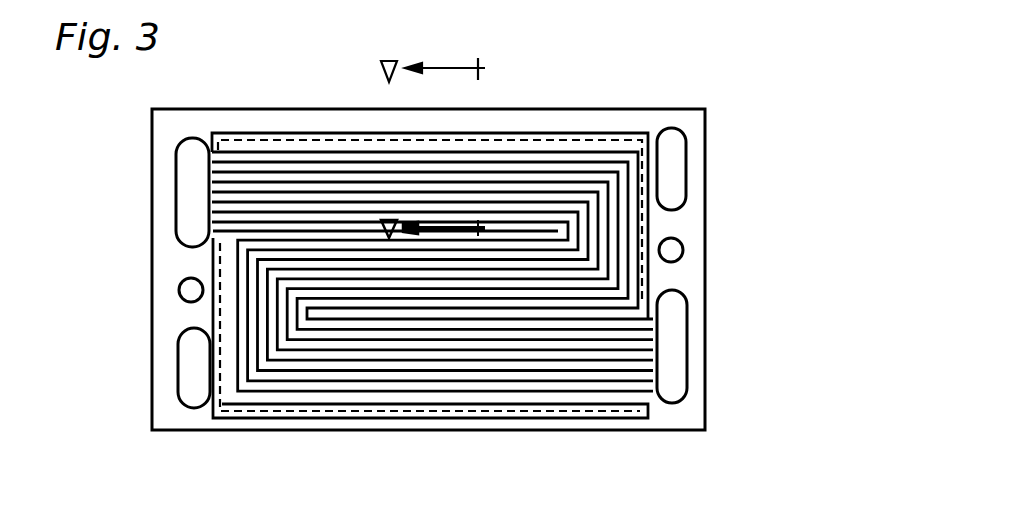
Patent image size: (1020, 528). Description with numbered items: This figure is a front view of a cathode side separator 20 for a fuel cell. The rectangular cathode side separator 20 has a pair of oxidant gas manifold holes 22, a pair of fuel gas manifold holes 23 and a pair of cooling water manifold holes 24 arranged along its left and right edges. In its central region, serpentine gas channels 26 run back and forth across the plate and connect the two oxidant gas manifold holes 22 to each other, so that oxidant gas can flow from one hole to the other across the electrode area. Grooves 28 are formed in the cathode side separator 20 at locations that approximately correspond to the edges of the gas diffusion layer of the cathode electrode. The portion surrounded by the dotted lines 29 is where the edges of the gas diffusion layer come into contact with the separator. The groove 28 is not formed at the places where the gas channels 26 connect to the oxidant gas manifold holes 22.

The cathode side separator 20 is at (688, 122).
The oxidant gas manifold holes 22 is at (190, 184).
The fuel gas manifold holes 23 is at (672, 181).
The cooling water manifold holes 24 is at (672, 250).
The gas channels 26 is at (595, 160).
The grooves 28 is at (323, 136).
The dotted lines 29 is at (446, 413).